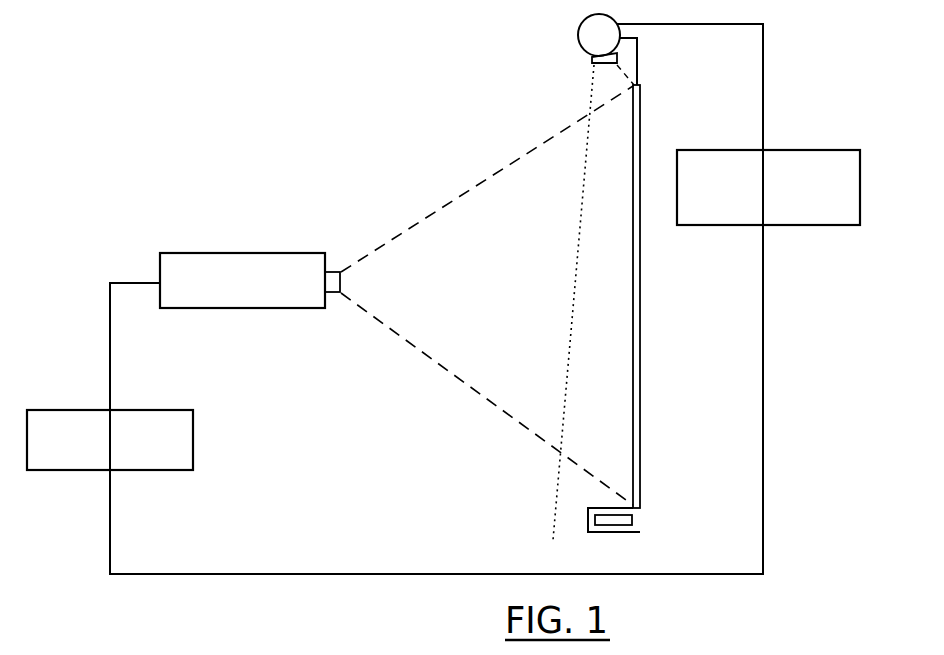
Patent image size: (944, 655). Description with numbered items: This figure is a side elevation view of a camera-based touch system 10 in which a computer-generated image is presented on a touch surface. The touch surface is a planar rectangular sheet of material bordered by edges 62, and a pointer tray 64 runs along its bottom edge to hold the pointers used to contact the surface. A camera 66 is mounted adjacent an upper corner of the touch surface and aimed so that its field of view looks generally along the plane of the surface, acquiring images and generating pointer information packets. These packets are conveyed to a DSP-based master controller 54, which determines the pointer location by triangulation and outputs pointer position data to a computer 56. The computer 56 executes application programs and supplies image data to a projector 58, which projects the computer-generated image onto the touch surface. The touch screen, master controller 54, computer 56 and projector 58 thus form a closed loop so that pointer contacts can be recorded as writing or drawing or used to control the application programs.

The interactive display system 10 is at (104, 228).
The master controller 54 is at (797, 152).
The computer 56 is at (170, 413).
The projector 58 is at (310, 300).
The edges 62 is at (640, 330).
The pointer tray 64 is at (628, 532).
The cameras 66 is at (580, 36).